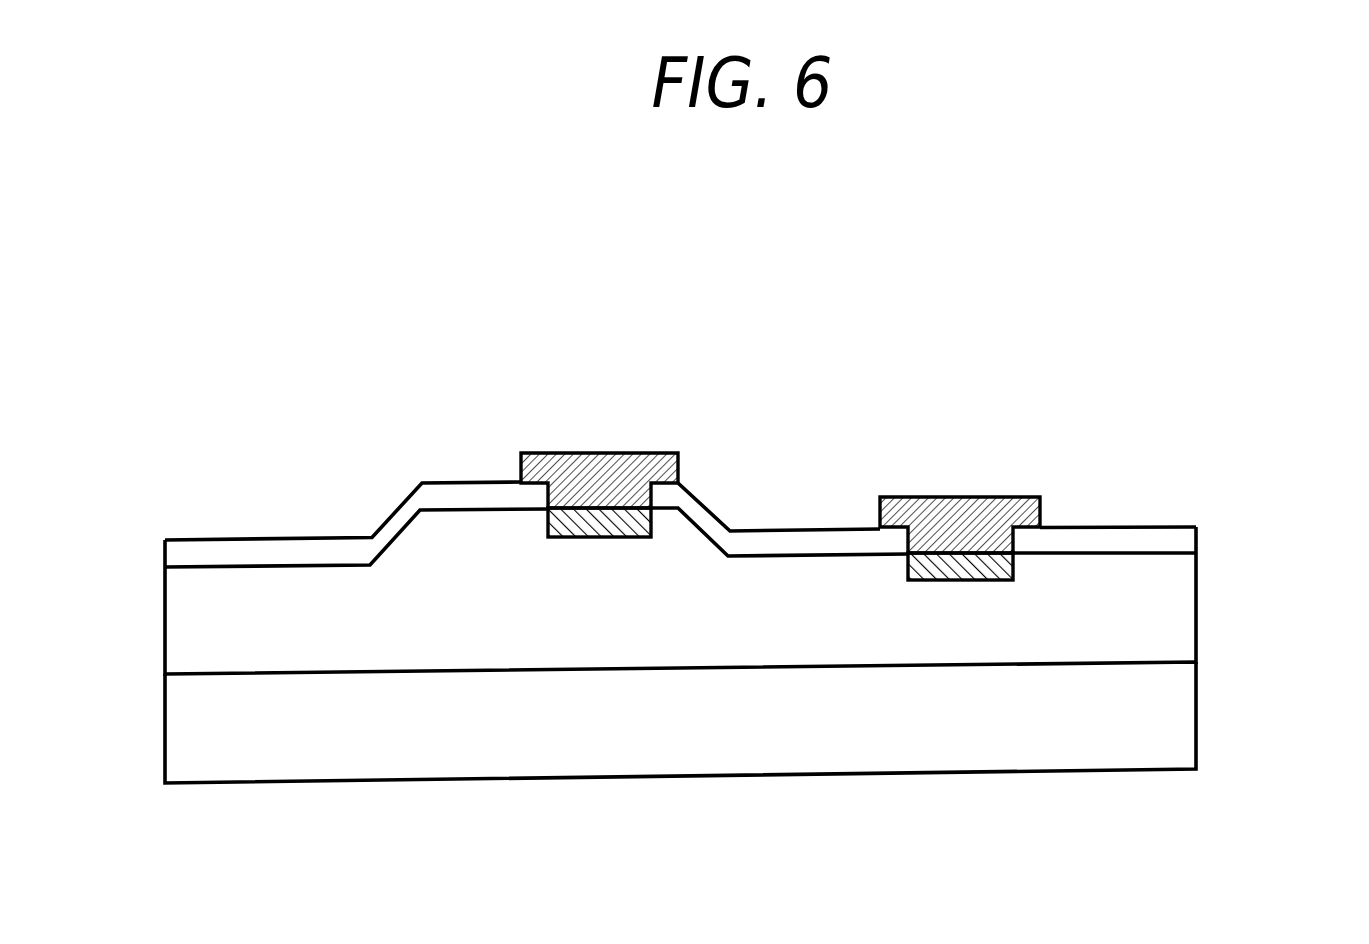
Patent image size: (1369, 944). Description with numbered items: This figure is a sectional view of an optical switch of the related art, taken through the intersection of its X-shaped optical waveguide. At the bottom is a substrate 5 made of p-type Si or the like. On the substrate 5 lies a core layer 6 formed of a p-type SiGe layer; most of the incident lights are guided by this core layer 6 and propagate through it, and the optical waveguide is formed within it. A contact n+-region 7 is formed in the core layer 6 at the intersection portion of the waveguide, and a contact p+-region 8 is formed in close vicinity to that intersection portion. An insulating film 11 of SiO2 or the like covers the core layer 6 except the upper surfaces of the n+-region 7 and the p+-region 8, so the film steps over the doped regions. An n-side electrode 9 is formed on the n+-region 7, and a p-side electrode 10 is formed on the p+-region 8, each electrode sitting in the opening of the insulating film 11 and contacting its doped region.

The substrate 5 is at (1196, 712).
The core layer 6 is at (1196, 607).
The contact n+-region 7 is at (600, 537).
The contact p+-region 8 is at (958, 580).
The n-side electrode 9 is at (609, 452).
The p-side electrode 10 is at (963, 496).
The insulating film 11 is at (240, 557).